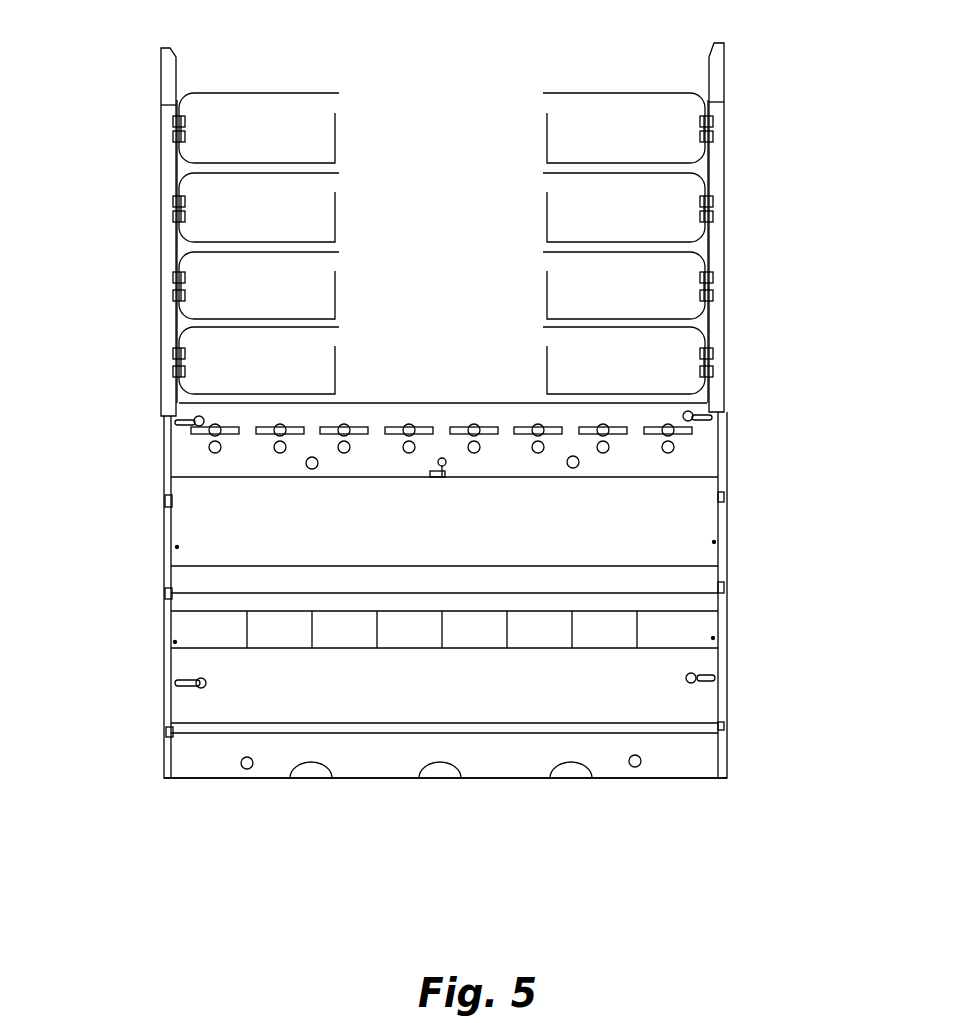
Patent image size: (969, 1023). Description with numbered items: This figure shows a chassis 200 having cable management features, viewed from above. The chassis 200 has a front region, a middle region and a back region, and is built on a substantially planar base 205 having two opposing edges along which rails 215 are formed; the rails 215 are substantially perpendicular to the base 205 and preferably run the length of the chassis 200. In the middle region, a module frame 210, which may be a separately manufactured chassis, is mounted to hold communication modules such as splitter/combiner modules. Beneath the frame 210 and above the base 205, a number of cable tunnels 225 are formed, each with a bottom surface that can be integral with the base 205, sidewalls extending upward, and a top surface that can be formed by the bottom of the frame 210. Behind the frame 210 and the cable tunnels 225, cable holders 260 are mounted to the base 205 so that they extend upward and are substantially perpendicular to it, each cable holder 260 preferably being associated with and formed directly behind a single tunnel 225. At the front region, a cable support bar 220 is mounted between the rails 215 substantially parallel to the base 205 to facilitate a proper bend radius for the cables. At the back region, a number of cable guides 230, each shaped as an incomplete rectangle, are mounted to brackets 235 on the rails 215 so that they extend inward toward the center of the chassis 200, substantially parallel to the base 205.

The chassis 200 is at (625, 932).
The base 205 is at (513, 753).
The module frame 210 is at (690, 518).
The rails 215 is at (723, 468).
The cable support bar 220 is at (440, 727).
The cable tunnels 225 is at (283, 631).
The cable guides 230 is at (267, 120).
The brackets 235 is at (713, 237).
The cable holders 260 is at (360, 430).